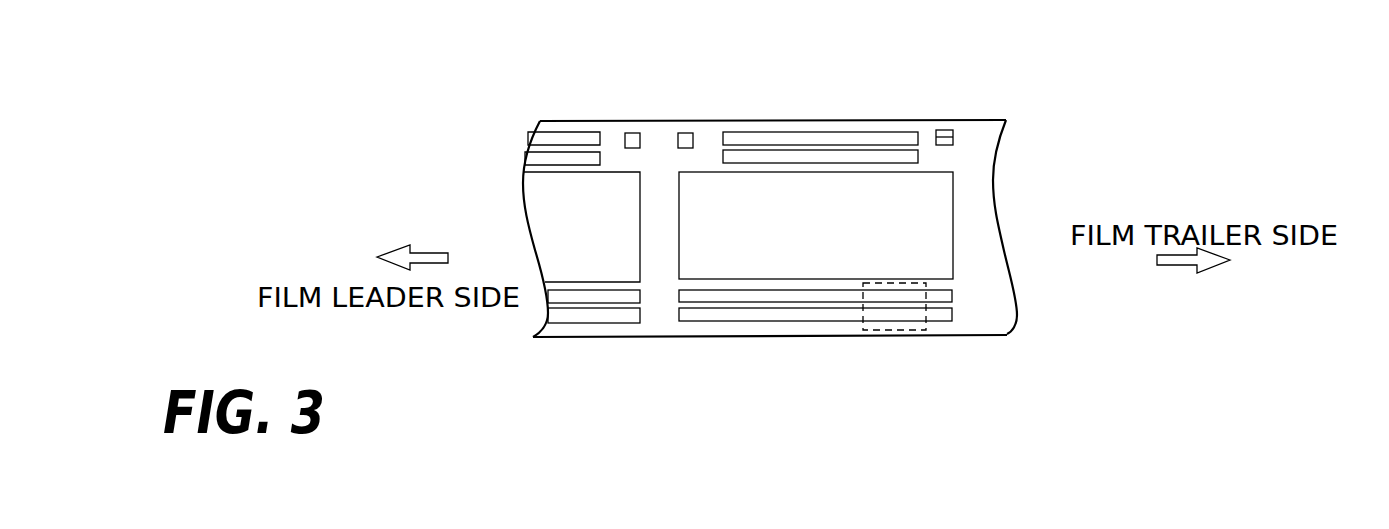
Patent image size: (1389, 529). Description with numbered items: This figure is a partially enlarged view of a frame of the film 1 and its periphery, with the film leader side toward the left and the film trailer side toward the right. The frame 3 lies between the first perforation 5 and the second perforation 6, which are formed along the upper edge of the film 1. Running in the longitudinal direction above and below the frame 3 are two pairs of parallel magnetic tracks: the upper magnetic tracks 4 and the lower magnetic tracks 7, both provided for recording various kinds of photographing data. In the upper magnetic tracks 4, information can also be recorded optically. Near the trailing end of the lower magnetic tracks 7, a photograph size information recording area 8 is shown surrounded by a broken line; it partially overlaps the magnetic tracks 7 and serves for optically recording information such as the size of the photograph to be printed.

The film 1 is at (528, 228).
The frame 3 is at (953, 199).
The upper magnetic tracks 4 is at (763, 160).
The first perforation 5 is at (685, 133).
The second perforation 6 is at (950, 130).
The lower magnetic tracks 7 is at (952, 293).
The photograph size information recording area 8 is at (873, 331).